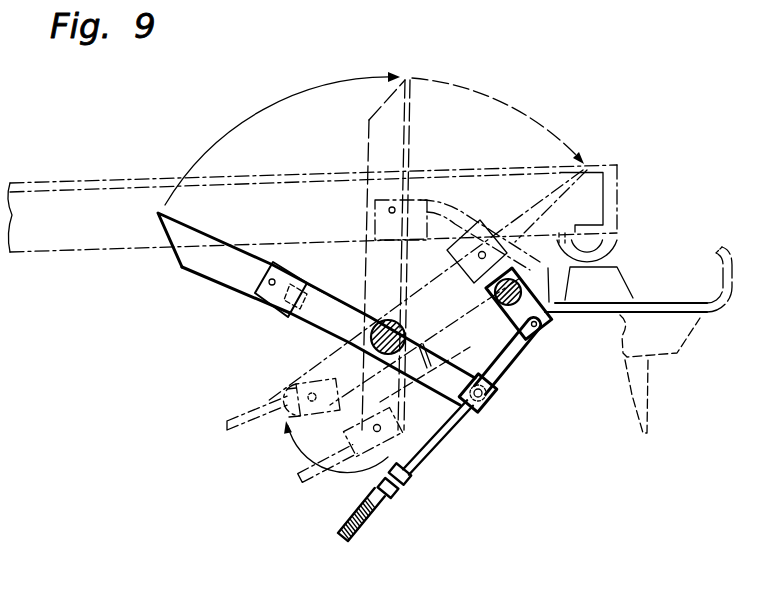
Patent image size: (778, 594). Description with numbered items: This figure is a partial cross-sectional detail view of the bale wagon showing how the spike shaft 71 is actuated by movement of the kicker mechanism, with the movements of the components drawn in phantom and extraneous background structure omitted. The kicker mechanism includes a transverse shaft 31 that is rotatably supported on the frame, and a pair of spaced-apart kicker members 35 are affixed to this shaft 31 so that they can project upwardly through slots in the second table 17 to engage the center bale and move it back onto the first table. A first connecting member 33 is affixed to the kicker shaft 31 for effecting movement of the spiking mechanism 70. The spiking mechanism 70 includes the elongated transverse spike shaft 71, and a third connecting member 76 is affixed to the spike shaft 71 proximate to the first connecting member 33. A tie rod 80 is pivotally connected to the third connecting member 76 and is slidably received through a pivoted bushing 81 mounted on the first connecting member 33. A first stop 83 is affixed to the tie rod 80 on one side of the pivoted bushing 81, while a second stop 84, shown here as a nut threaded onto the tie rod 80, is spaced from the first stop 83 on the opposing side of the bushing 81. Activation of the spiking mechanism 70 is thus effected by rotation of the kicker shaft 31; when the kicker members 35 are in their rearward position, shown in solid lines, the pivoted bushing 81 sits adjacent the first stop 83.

The second table 17 is at (588, 163).
The transverse shaft 31 is at (370, 338).
The first connecting member 33 is at (426, 464).
The kicker member 35 is at (218, 283).
The spiking mechanism 70 is at (565, 440).
The spike shaft 71 is at (514, 271).
The third connecting member 76 is at (552, 326).
The tie rod 80 is at (370, 527).
The pivoted bushing 81 is at (480, 413).
The first stop 83 is at (499, 391).
The second stop 84 is at (407, 492).